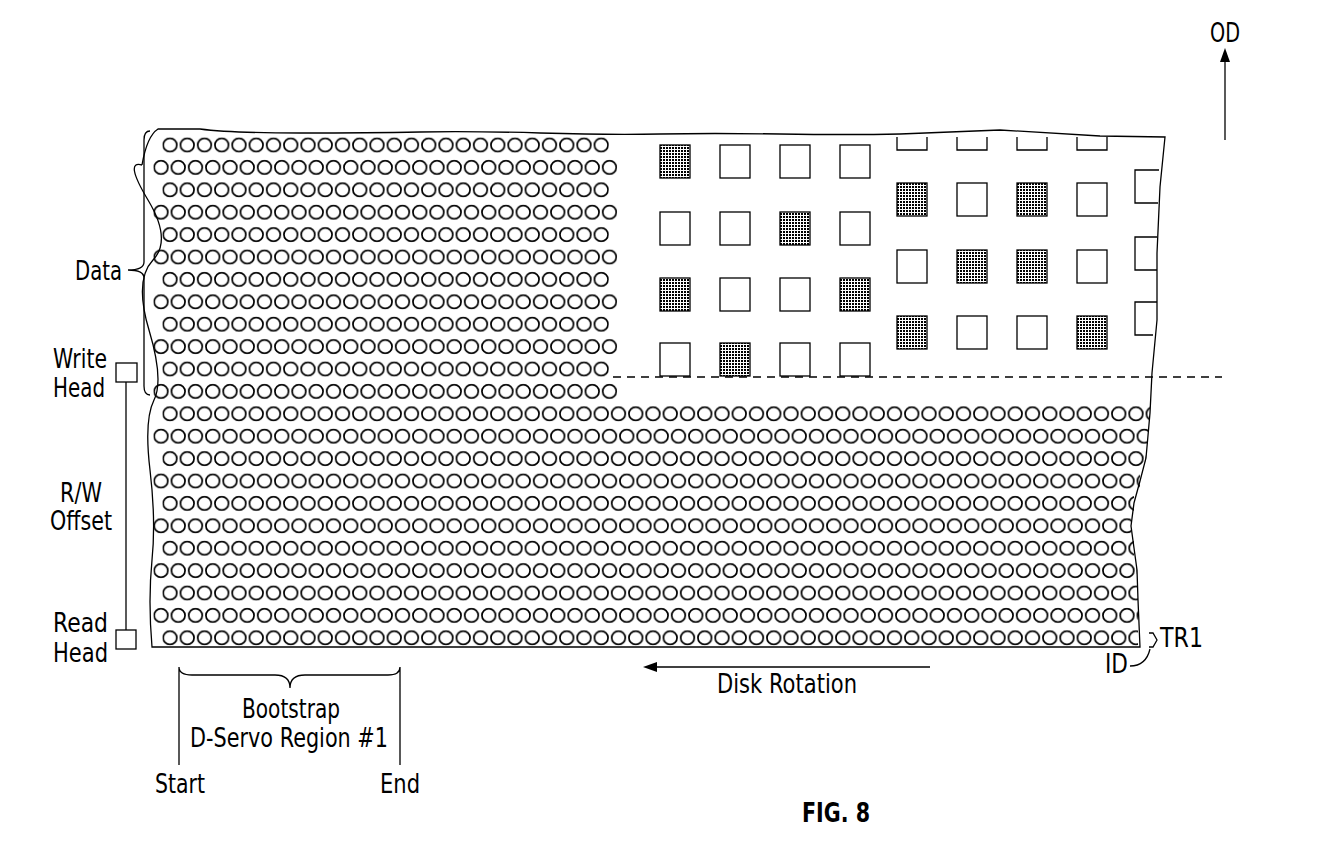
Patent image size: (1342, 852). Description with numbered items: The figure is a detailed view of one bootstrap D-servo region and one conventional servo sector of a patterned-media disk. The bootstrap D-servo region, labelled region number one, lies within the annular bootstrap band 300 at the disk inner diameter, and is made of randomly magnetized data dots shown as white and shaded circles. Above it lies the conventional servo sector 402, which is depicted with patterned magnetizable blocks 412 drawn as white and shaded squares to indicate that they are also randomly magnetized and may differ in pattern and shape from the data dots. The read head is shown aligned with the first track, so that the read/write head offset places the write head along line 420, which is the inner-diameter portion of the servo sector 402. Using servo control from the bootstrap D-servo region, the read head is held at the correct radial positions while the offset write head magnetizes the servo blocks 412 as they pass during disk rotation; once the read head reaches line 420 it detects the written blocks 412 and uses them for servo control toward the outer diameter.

The bootstrap band 300 is at (1210, 645).
The servo sector 402 is at (908, 209).
The patterned magnetizable blocks 412 is at (1142, 153).
The line 420 is at (1210, 377).